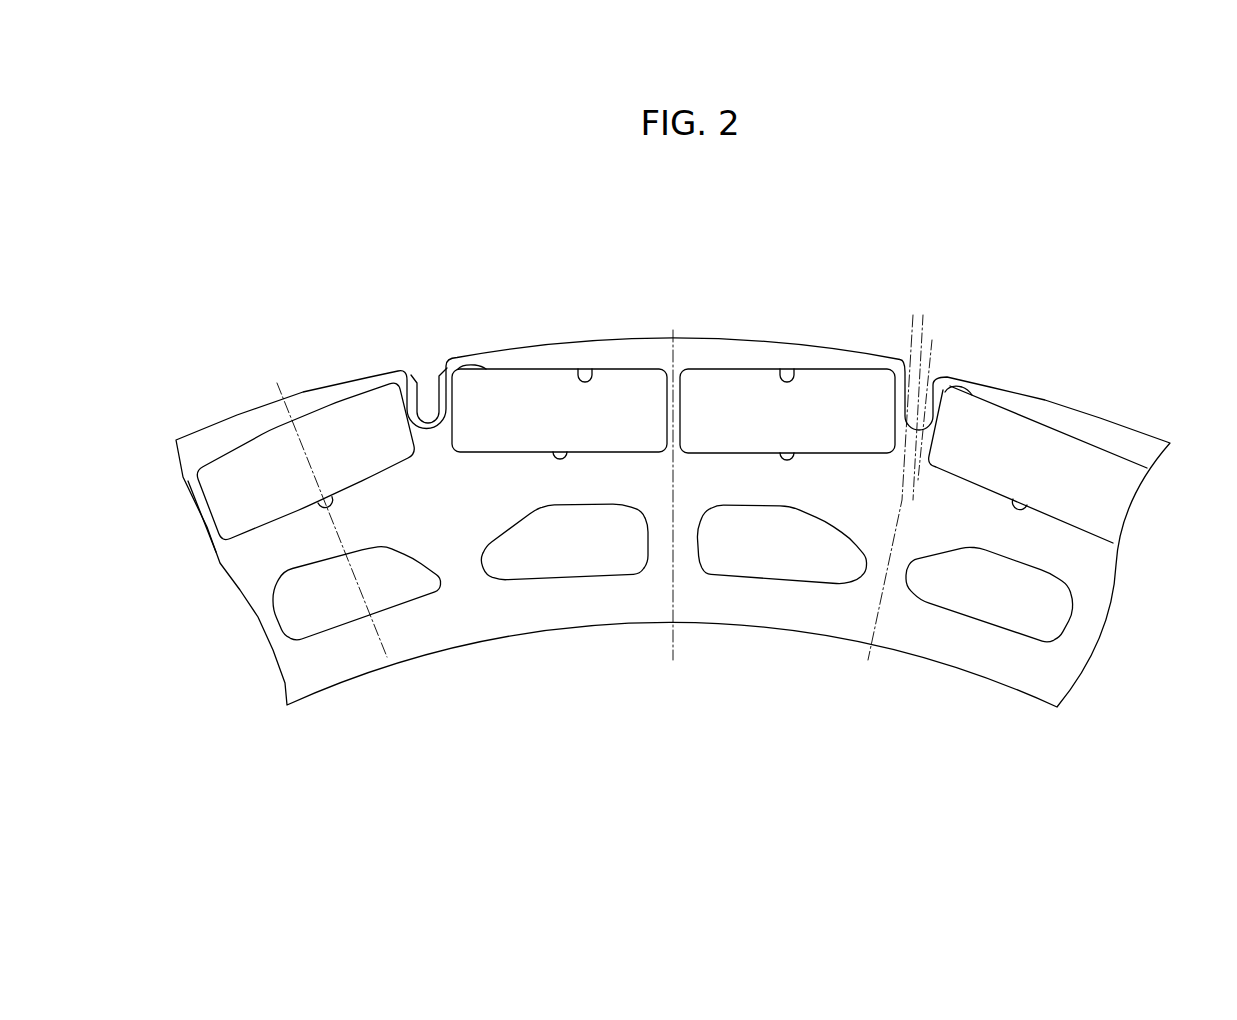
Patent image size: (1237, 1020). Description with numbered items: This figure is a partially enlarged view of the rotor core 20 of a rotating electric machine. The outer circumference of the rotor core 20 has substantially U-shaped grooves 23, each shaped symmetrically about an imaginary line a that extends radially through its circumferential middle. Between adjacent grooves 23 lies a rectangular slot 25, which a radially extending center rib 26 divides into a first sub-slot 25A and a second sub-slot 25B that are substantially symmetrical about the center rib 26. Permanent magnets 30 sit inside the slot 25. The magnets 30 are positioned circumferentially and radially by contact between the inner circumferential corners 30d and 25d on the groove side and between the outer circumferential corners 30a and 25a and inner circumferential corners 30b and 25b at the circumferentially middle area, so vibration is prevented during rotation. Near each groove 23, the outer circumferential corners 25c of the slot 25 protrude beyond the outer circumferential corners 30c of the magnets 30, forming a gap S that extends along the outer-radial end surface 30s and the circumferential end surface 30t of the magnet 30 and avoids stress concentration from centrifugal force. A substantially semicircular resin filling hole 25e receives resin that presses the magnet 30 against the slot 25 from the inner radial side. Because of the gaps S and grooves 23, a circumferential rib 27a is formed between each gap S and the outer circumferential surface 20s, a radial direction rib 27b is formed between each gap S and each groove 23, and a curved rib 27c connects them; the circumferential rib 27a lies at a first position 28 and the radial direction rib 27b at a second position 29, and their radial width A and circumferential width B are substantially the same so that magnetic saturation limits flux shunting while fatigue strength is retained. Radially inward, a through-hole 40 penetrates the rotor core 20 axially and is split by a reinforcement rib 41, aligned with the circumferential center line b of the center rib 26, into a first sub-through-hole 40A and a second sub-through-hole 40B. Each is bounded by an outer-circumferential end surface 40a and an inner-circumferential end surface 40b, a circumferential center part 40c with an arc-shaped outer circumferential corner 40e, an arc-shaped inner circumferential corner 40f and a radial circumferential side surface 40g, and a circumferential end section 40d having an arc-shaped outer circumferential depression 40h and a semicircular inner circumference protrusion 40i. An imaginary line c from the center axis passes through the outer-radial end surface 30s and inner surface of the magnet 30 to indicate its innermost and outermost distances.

The rotor core 20 is at (655, 597).
The outer circumferential surface 20s is at (637, 356).
The groove 23 is at (420, 390).
The slot 25 is at (673, 330).
The first sub-slot 25A is at (787, 355).
The second sub-slot 25B is at (585, 372).
The outer circumferential corner of slot 25a is at (204, 478).
The inner circumferential corner of slot 25b is at (235, 550).
The outer circumferential corner of slot 25c is at (382, 378).
The inner circumferential corner of slot 25d is at (437, 460).
The resin filling hole 25e is at (549, 463).
The center rib 26 is at (685, 398).
The circumferential rib 27a is at (447, 380).
The radial direction rib 27b is at (432, 385).
The curved rib 27c is at (443, 372).
The first position 28 is at (456, 358).
The second position 29 is at (428, 410).
The permanent magnet 30 is at (724, 403).
The outer circumferential corner of permanent magnet 30a is at (216, 472).
The inner circumferential corner of permanent magnet 30b is at (245, 545).
The outer circumferential corner of permanent magnet 30c is at (373, 390).
The inner circumferential corner of permanent magnet 30d is at (392, 470).
The outer-radial end surface 30s is at (757, 368).
The circumferential end surface 30t is at (445, 445).
The through-hole 40 is at (673, 629).
The first sub-through-hole 40A is at (781, 607).
The second sub-through-hole 40B is at (602, 547).
The outer-circumferential end surface 40a is at (1023, 560).
The inner-circumferential end surface 40b is at (993, 623).
The circumferential center part 40c is at (1170, 563).
The circumferential end section 40d is at (957, 302).
The outer circumferential corner 40e is at (1072, 592).
The inner circumferential corner 40f is at (1065, 628).
The circumferential side surface 40g is at (1070, 620).
The outer circumferential depression 40h is at (943, 552).
The inner circumference protrusion 40i is at (920, 488).
The reinforcement rib 41 is at (687, 532).
The gap S is at (413, 400).
The imaginary line a is at (868, 663).
The circumferential center line b is at (676, 648).
The imaginary line c is at (393, 668).
The radial width A is at (948, 380).
The circumferential width B is at (930, 332).